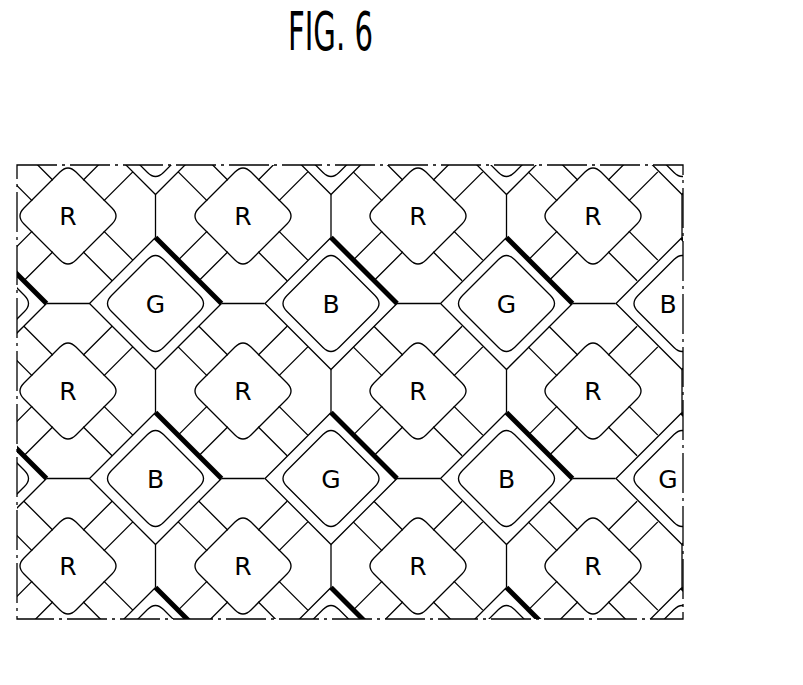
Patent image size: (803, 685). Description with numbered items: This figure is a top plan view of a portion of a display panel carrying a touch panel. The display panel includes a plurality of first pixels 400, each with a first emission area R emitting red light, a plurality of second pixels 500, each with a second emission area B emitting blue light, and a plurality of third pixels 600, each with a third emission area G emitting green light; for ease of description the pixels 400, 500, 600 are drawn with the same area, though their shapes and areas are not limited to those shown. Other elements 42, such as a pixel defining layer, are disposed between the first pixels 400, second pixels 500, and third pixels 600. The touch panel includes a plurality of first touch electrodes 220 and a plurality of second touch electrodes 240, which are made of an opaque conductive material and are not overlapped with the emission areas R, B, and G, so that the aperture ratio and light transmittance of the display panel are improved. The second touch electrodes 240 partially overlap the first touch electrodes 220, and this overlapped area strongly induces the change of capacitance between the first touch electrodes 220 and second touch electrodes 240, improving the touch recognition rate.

The other elements 42 is at (108, 177).
The first pixels 400 is at (255, 166).
The second pixels 500 is at (334, 271).
The third pixels 600 is at (511, 270).
The first touch electrodes 220 is at (615, 478).
The second touch electrodes 240 is at (507, 578).